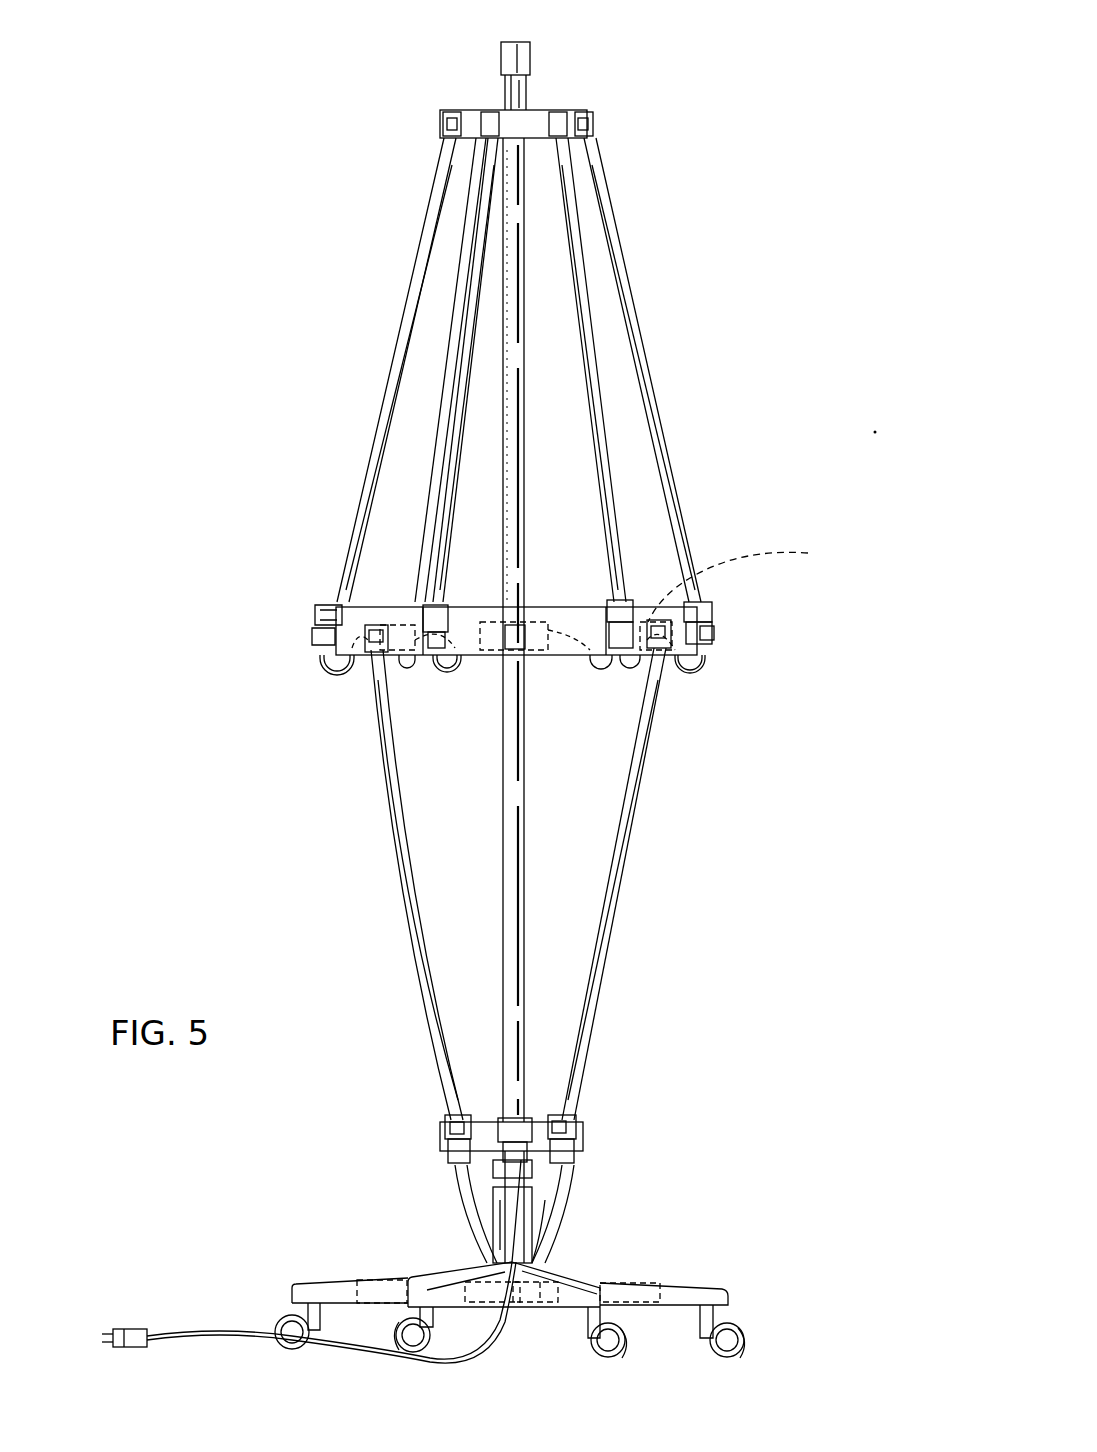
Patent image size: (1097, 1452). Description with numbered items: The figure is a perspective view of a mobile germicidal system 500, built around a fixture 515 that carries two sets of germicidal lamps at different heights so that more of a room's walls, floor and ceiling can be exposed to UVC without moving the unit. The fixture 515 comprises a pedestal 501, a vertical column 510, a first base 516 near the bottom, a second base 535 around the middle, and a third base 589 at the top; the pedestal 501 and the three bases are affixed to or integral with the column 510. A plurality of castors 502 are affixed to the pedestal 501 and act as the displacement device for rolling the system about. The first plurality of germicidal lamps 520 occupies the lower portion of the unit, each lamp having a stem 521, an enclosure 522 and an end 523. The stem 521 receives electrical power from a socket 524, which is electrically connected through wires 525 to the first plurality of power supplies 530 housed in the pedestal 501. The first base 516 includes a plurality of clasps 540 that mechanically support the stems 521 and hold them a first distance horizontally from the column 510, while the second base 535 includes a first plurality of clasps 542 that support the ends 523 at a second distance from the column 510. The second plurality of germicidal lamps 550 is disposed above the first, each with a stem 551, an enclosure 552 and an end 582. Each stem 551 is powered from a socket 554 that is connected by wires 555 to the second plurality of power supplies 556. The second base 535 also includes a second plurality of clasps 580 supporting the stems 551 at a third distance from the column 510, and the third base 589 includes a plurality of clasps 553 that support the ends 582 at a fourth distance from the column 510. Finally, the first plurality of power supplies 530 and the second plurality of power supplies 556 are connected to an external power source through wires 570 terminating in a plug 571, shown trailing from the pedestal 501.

The mobile germicidal system 500 is at (700, 88).
The third base 589 is at (540, 122).
The end 582 is at (455, 118).
The plurality of clasps 553 is at (446, 126).
The second plurality of germicidal lamps 550 is at (638, 327).
The enclosure 552 is at (650, 384).
The fixture 515 is at (500, 405).
The column 510 is at (525, 836).
The second base 535 is at (368, 626).
The first plurality of clasps 542 is at (330, 636).
The second plurality of power supplies 556 is at (753, 581).
The stem 551 is at (704, 606).
The second plurality of clasps 580 is at (706, 620).
The socket 554 is at (708, 640).
The wires 555 is at (703, 652).
The end 523 is at (704, 668).
The first plurality of germicidal lamps 520 is at (623, 867).
The enclosure 522 is at (608, 940).
The first base 516 is at (450, 1118).
The plurality of clasps 540 is at (458, 1134).
The stem 521 is at (578, 1122).
The socket 524 is at (572, 1160).
The wires 525 is at (548, 1225).
The pedestal 501 is at (320, 1288).
The first plurality of power supplies 530 is at (368, 1280).
The castors 502 is at (280, 1322).
The wires 570 is at (192, 1330).
The plug 571 is at (133, 1330).